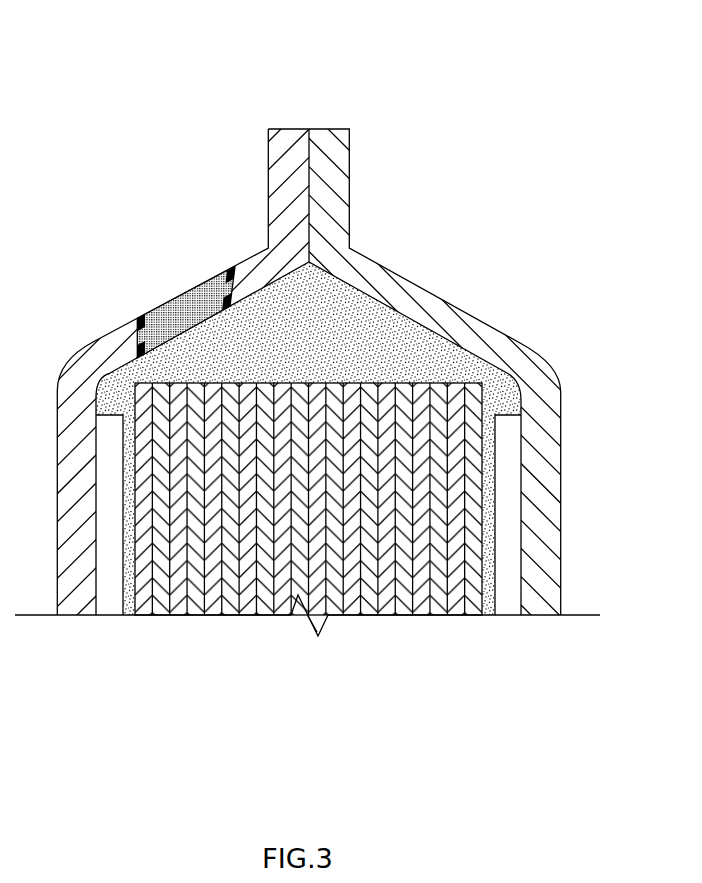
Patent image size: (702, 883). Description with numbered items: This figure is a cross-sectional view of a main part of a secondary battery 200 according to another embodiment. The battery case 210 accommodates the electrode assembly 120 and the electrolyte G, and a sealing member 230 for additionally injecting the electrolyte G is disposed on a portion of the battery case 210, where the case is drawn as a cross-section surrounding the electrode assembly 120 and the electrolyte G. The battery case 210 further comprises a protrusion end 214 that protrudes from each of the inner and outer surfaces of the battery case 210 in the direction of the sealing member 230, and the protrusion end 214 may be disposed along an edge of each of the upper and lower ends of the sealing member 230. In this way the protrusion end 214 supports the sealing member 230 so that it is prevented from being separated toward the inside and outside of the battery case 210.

The secondary battery 200 is at (573, 45).
The battery case 210 is at (480, 297).
The protrusion end 214 is at (140, 322).
The sealing member 230 is at (193, 308).
The electrolyte G is at (370, 326).
The electrode assembly 120 is at (237, 644).